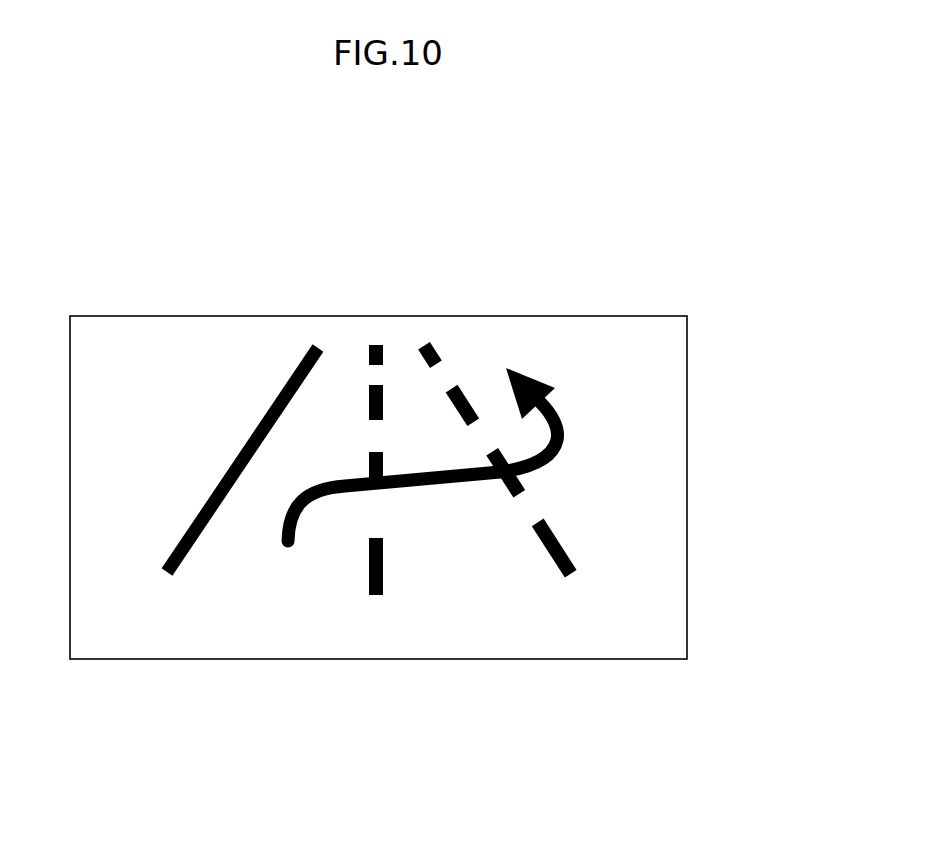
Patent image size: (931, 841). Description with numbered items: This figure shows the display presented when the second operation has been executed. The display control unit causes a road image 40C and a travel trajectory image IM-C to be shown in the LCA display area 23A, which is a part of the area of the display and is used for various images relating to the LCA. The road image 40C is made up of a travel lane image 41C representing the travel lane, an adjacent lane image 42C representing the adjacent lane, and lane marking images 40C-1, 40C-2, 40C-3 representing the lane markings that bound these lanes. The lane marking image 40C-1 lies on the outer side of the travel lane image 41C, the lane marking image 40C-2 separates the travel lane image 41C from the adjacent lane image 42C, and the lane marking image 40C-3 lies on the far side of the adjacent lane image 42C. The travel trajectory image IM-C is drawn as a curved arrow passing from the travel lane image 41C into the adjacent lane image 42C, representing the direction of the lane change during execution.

The LCA display area 23A is at (687, 443).
The road image 40C is at (399, 527).
The lane marking image 40C-1 is at (207, 500).
The lane marking image 40C-2 is at (367, 563).
The lane marking image 40C-3 is at (543, 544).
The travel lane image 41C is at (314, 415).
The adjacent lane image 42C is at (420, 407).
The travel trajectory image IM-C is at (555, 465).